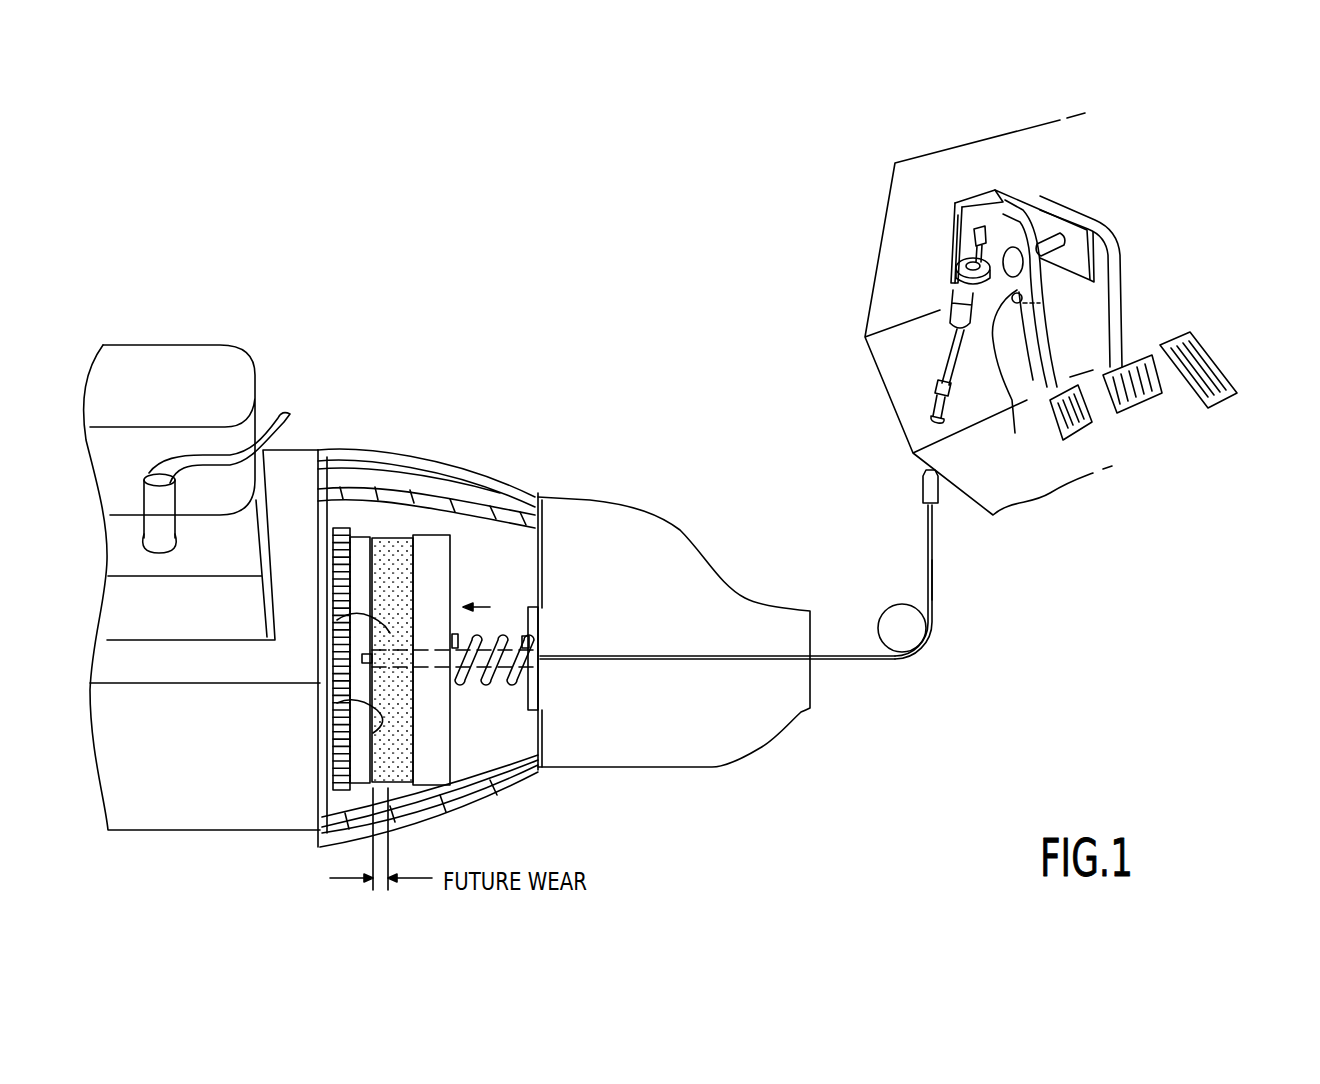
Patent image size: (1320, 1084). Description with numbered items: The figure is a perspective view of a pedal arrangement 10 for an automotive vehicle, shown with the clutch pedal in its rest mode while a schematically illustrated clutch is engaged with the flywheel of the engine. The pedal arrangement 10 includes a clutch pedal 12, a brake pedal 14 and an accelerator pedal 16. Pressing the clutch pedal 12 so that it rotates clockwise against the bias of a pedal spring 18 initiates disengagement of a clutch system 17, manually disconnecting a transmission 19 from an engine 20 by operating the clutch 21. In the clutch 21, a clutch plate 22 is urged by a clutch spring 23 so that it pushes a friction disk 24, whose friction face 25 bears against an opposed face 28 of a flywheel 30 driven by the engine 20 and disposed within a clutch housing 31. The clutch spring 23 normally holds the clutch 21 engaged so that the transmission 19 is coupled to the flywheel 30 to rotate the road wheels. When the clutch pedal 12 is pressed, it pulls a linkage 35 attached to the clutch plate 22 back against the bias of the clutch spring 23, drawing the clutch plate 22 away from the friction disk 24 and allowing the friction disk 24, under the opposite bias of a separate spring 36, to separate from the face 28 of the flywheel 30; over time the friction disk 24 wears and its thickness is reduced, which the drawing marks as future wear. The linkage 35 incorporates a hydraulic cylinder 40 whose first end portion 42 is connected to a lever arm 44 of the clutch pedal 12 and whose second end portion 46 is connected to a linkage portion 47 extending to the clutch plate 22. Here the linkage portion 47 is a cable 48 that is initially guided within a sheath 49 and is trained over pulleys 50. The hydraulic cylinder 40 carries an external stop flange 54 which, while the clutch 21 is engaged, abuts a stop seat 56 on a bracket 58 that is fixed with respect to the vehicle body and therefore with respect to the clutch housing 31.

The pedal arrangement 10 is at (1135, 208).
The clutch pedal 12 is at (1090, 428).
The brake pedal 14 is at (1137, 397).
The accelerator pedal 16 is at (1192, 344).
The clutch system 17 is at (780, 492).
The pedal spring 18 is at (1013, 410).
The transmission 19 is at (667, 518).
The engine 20 is at (188, 382).
The clutch 21 is at (477, 733).
The clutch plate 22 is at (438, 540).
The clutch spring 23 is at (503, 628).
The friction disk 24 is at (400, 540).
The friction face 25 is at (370, 755).
The opposed face 28 is at (337, 703).
The flywheel 30 is at (337, 530).
The clutch housing 31 is at (420, 456).
The linkage 35 is at (927, 406).
The separate spring 36 is at (337, 620).
The hydraulic cylinder 40 is at (940, 310).
The first end portion 42 is at (975, 233).
The lever arm 44 is at (1003, 238).
The second end portion 46 is at (937, 387).
The linkage portion 47 is at (947, 595).
The cable 48 is at (927, 551).
The sheath 49 is at (923, 491).
The pulleys 50 is at (895, 623).
The external stop flange 54 is at (953, 270).
The stop seat 56 is at (960, 253).
The bracket 58 is at (1037, 228).